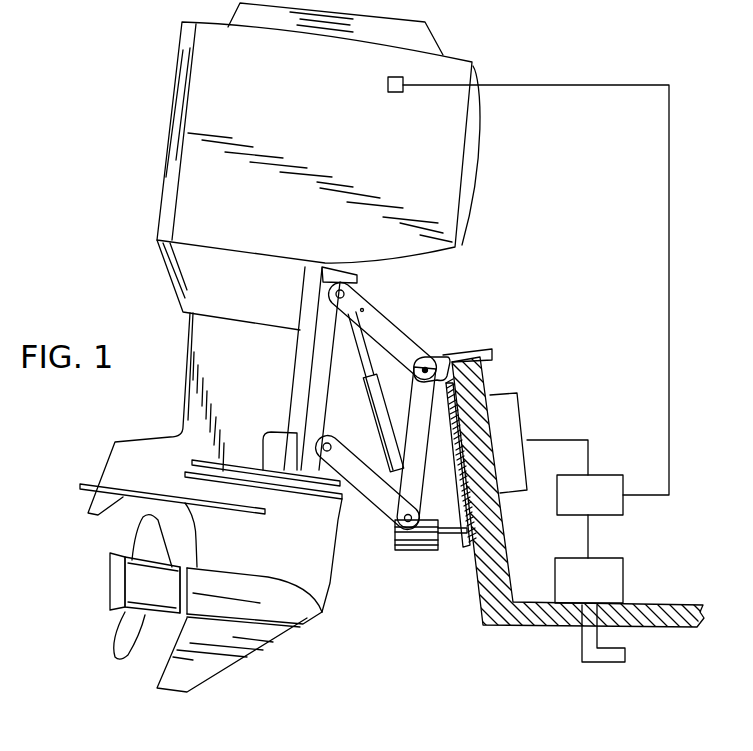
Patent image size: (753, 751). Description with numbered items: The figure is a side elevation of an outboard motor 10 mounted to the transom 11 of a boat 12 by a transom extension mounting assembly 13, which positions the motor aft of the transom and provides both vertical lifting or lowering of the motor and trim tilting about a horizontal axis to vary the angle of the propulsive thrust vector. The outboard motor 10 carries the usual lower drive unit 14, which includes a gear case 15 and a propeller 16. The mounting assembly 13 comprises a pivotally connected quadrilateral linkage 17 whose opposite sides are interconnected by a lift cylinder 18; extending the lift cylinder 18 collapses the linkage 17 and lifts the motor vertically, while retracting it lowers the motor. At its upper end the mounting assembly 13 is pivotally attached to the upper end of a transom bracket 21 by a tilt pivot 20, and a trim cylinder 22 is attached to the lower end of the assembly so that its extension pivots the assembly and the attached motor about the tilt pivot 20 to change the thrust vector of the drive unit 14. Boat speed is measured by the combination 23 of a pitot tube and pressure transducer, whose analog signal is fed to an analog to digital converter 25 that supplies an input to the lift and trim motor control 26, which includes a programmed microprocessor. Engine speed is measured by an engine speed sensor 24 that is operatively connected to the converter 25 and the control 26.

The outboard motor 10 is at (190, 193).
The transom 11 is at (487, 380).
The boat 12 is at (607, 438).
The transom extension mounting assembly 13 is at (373, 536).
The lower drive unit 14 is at (230, 660).
The gear case 15 is at (290, 627).
The propeller 16 is at (138, 585).
The quadrilateral linkage 17 is at (388, 332).
The lift cylinder 18 is at (380, 408).
The tilt pivot 20 is at (440, 357).
The transom bracket 21 is at (477, 348).
The trim cylinder 22 is at (417, 550).
The combination of a pitot tube and pressure transducer 23 is at (575, 591).
The engine speed sensor 24 is at (397, 92).
The analog to digital converter 25 is at (578, 505).
The lift and trim motor control 26 is at (518, 405).